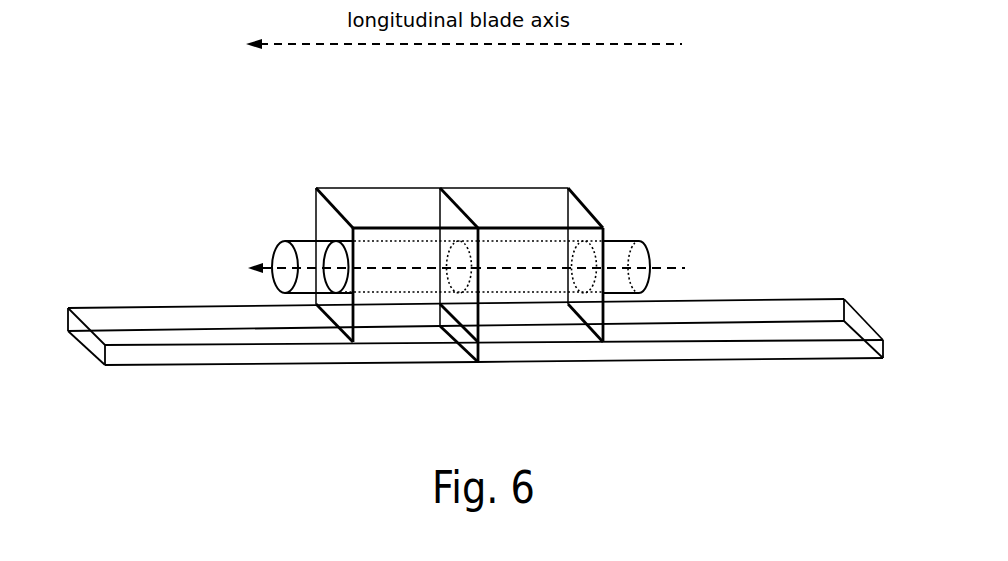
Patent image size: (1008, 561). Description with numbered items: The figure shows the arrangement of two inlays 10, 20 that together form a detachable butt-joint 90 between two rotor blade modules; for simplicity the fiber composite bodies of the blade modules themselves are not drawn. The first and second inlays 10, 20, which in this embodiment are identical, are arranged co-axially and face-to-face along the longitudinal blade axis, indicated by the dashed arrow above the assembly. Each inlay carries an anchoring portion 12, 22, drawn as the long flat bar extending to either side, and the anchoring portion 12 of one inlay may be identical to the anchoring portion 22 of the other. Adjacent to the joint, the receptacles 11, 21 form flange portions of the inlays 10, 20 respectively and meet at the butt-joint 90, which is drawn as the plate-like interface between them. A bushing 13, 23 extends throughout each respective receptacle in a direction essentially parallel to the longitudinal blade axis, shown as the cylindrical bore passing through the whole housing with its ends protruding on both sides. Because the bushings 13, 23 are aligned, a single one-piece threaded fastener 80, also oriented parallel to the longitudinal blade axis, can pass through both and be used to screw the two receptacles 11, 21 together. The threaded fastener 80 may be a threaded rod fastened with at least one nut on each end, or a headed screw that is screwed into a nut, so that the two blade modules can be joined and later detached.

The inlay 10 is at (767, 108).
The inlay 20 is at (153, 118).
The receptacle 11 is at (528, 212).
The receptacle 21 is at (397, 212).
The anchoring portion 12 is at (797, 313).
The anchoring portion 22 is at (185, 312).
The bushing 13 is at (605, 242).
The bushing 23 is at (339, 255).
The threaded fastener 80 is at (652, 258).
The detachable butt-joint 90 is at (477, 352).